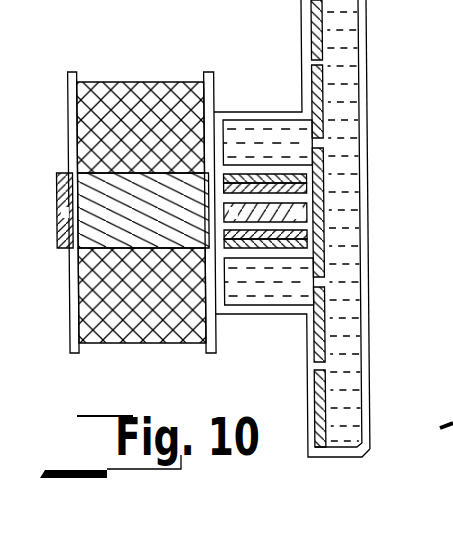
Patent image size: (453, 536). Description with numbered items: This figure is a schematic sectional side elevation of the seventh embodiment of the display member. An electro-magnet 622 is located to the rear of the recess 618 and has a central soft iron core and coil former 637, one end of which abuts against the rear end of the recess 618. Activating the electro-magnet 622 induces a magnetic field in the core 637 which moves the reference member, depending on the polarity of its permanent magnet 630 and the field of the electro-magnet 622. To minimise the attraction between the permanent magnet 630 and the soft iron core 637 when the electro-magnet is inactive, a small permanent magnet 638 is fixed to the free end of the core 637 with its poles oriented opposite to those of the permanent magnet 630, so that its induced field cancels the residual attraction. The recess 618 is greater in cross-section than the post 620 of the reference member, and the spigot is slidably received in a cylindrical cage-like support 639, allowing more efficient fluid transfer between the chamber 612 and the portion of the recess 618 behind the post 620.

The chamber 612 is at (342, 137).
The recess 618 is at (254, 112).
The post 620 is at (299, 177).
The electro-magnet 622 is at (147, 82).
The permanent magnet 630 is at (299, 204).
The soft iron core and coil former 637 is at (108, 200).
The small permanent magnet 638 is at (55, 180).
The cylindrical cage-like support 639 is at (287, 260).